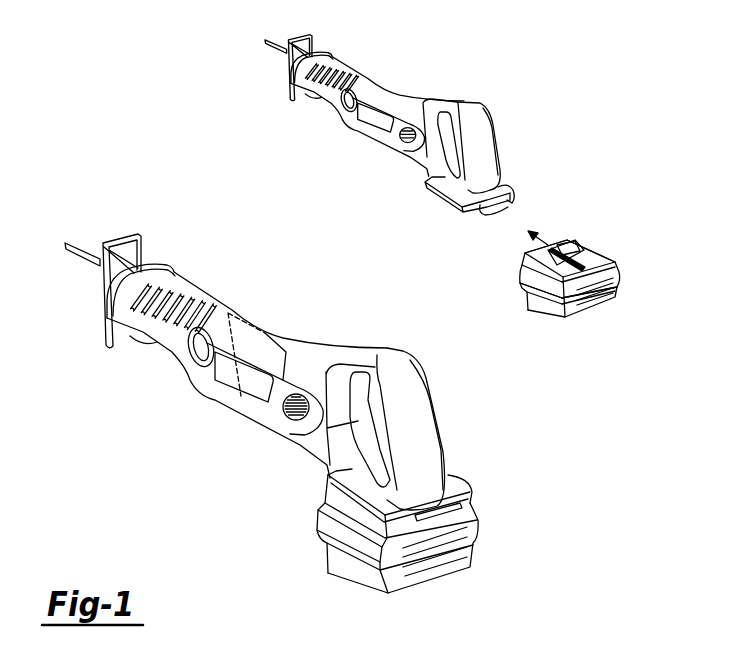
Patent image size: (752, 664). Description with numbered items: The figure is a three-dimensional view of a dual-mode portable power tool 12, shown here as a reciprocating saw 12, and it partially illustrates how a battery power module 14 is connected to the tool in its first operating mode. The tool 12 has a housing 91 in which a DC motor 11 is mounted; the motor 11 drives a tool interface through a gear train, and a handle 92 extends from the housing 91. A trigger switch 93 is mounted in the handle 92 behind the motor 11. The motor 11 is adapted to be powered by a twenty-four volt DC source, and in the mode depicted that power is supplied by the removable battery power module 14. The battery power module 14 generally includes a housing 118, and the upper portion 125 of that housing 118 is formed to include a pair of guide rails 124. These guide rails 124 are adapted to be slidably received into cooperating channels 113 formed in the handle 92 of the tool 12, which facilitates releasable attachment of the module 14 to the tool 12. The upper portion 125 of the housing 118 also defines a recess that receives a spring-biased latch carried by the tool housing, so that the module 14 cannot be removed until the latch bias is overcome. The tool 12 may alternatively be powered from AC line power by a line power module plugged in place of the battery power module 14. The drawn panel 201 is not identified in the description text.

The DC motor 11 is at (186, 370).
The dual-mode portable power tool 12 is at (264, 255).
The battery power module 14 is at (468, 416).
The housing 91 is at (359, 138).
The handle 92 is at (413, 282).
The trigger switch 93 is at (353, 310).
The channels 113 is at (491, 200).
The housing 118 is at (552, 297).
The guide rails 124 is at (540, 257).
The upper portion 125 is at (597, 241).
The display panel 201 is at (216, 399).